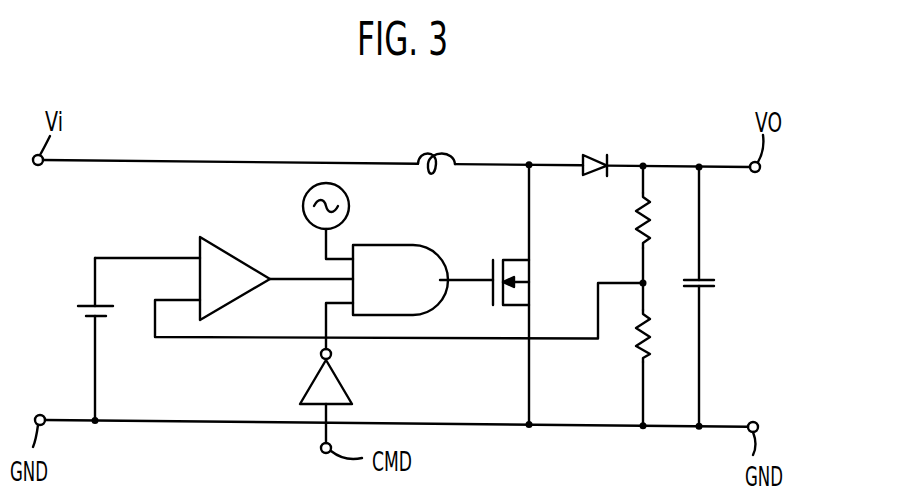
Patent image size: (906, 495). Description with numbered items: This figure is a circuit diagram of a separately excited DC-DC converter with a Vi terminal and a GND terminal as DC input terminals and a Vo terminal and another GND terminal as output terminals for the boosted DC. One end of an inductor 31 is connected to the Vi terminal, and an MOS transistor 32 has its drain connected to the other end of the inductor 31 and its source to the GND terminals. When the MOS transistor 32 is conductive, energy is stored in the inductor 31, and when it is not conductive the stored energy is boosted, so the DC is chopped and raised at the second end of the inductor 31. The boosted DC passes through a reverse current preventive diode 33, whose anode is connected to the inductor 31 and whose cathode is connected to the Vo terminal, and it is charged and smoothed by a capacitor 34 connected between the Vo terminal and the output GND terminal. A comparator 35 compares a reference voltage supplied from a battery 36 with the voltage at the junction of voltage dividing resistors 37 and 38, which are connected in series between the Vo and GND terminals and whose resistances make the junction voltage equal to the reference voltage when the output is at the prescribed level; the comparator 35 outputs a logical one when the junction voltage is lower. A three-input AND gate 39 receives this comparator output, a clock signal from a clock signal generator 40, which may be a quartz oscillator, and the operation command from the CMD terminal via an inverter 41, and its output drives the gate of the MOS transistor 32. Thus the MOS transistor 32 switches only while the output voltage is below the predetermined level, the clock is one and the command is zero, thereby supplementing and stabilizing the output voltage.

The inductor 31 is at (441, 157).
The MOS transistor 32 is at (522, 274).
The reverse current preventive diode 33 is at (596, 153).
The capacitor 34 is at (706, 277).
The comparator 35 is at (229, 251).
The battery 36 is at (90, 318).
The voltage dividing resistor 37 is at (651, 233).
The voltage dividing resistor 38 is at (648, 332).
The AND gate 39 is at (435, 254).
The clock signal generator 40 is at (350, 199).
The inverter 41 is at (346, 384).